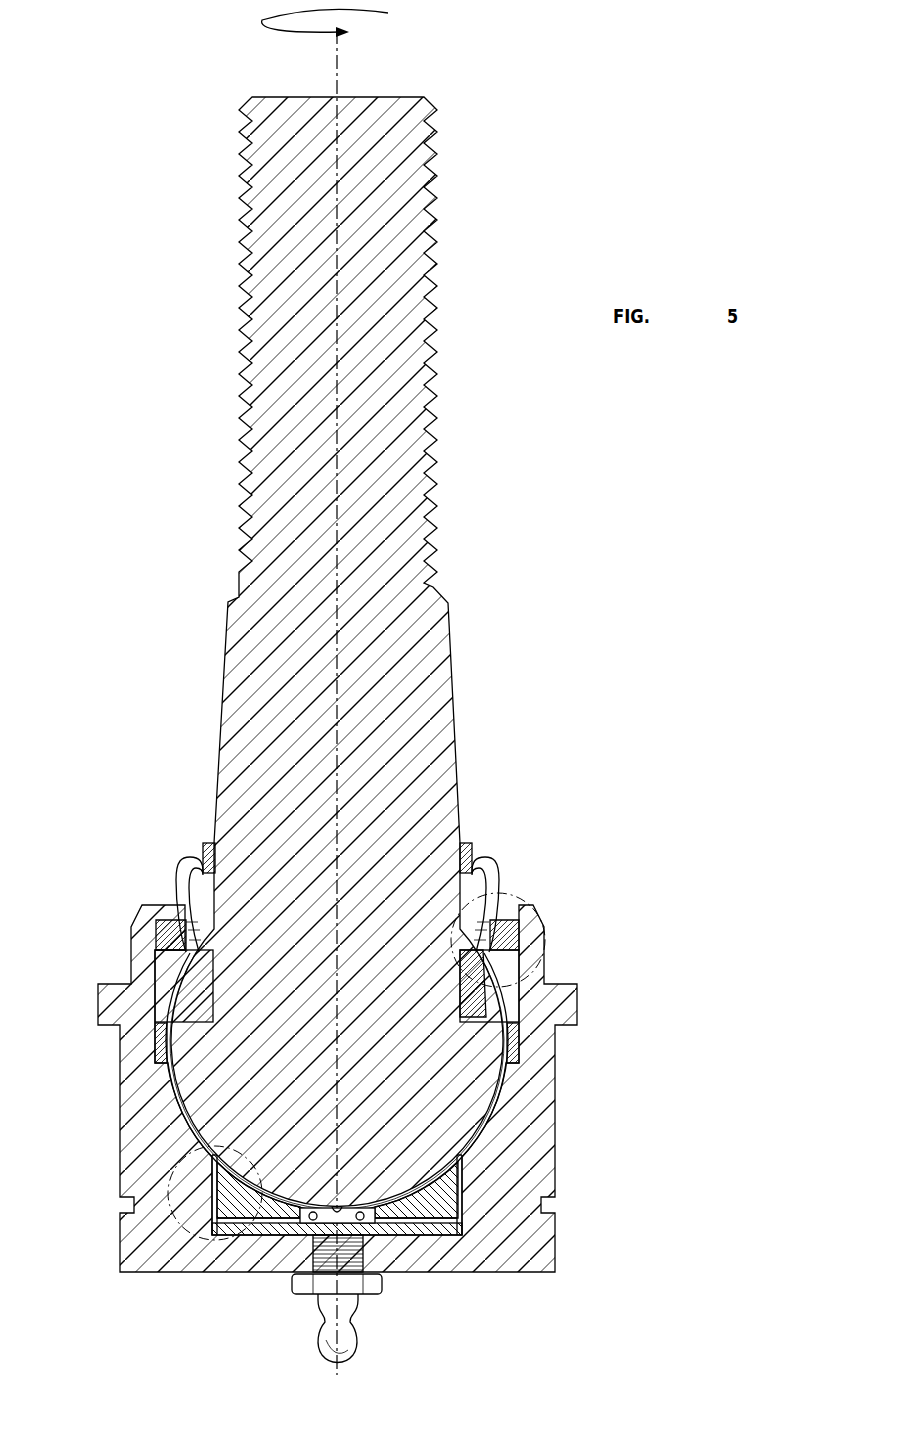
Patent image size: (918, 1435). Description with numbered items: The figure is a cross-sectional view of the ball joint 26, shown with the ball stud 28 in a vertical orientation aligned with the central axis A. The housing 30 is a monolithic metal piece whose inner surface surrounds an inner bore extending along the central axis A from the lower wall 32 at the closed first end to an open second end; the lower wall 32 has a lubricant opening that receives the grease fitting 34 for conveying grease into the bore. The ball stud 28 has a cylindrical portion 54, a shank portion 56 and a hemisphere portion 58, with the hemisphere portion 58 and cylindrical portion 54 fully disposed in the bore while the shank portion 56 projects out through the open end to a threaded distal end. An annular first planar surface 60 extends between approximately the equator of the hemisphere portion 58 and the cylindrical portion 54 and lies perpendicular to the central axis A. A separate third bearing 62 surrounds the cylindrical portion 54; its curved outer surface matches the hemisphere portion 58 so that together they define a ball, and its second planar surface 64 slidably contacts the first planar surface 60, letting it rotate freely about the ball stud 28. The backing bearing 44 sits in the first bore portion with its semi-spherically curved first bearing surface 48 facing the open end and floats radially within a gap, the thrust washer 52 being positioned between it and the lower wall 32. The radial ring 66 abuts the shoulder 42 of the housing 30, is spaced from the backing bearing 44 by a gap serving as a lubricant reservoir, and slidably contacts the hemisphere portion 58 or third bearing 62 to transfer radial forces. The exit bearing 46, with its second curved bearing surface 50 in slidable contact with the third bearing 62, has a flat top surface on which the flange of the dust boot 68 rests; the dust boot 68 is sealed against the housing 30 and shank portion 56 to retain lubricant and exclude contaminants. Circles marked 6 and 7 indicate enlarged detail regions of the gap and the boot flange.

The central axis A is at (344, 64).
The ball joint 26 is at (463, 470).
The ball stud 28 is at (442, 207).
The shank portion 56 is at (450, 640).
The hemisphere portion 58 is at (320, 1074).
The housing 30 is at (155, 1277).
The lower wall 32 is at (205, 1260).
The exit bearing 46 is at (150, 950).
The shoulder 42 is at (160, 1050).
The second planar surface 64 is at (522, 1030).
The radial ring 66 is at (517, 1052).
The second curved bearing surface 50 is at (230, 1000).
The third bearing 62 is at (207, 988).
The first planar surface 60 is at (167, 1007).
The cylindrical portion 54 is at (185, 905).
The dust boot 68 is at (208, 862).
The backing bearing 44 is at (467, 1200).
The first bearing surface 48 is at (245, 1160).
The thrust washer 52 is at (425, 1242).
The grease fitting 34 is at (347, 1338).
The detail region of FIG. 6 is at (172, 1222).
The detail region of FIG. 7 is at (548, 948).